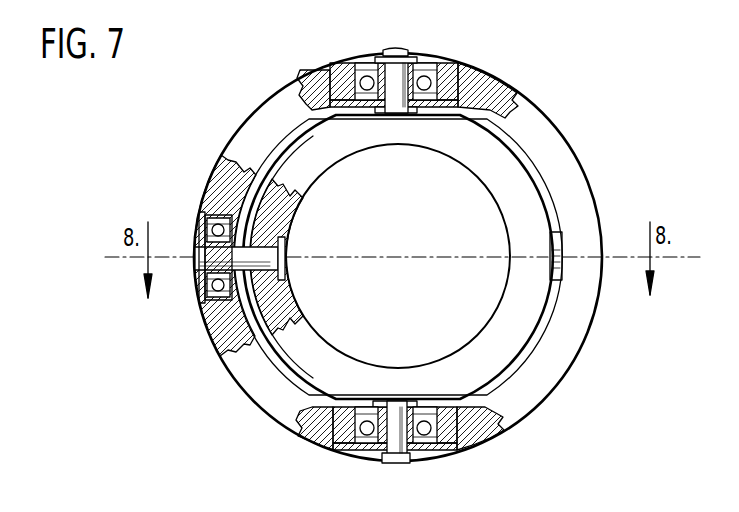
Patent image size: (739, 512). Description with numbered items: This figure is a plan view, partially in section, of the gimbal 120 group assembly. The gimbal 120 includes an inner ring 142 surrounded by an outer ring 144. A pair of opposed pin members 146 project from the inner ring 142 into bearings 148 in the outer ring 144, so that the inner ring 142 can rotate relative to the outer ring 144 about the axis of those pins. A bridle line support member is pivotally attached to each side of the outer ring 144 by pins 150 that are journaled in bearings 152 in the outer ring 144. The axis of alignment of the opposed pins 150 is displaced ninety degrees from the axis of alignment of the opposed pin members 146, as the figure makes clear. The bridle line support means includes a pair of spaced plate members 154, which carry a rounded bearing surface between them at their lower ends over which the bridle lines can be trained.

The gimbal 120 is at (574, 381).
The inner ring 142 is at (320, 352).
The outer ring 144 is at (262, 392).
The pin members 146 is at (266, 255).
The bearings 148 is at (210, 287).
The pins 150 is at (388, 53).
The bearings 152 is at (430, 62).
The plate members 154 is at (475, 68).